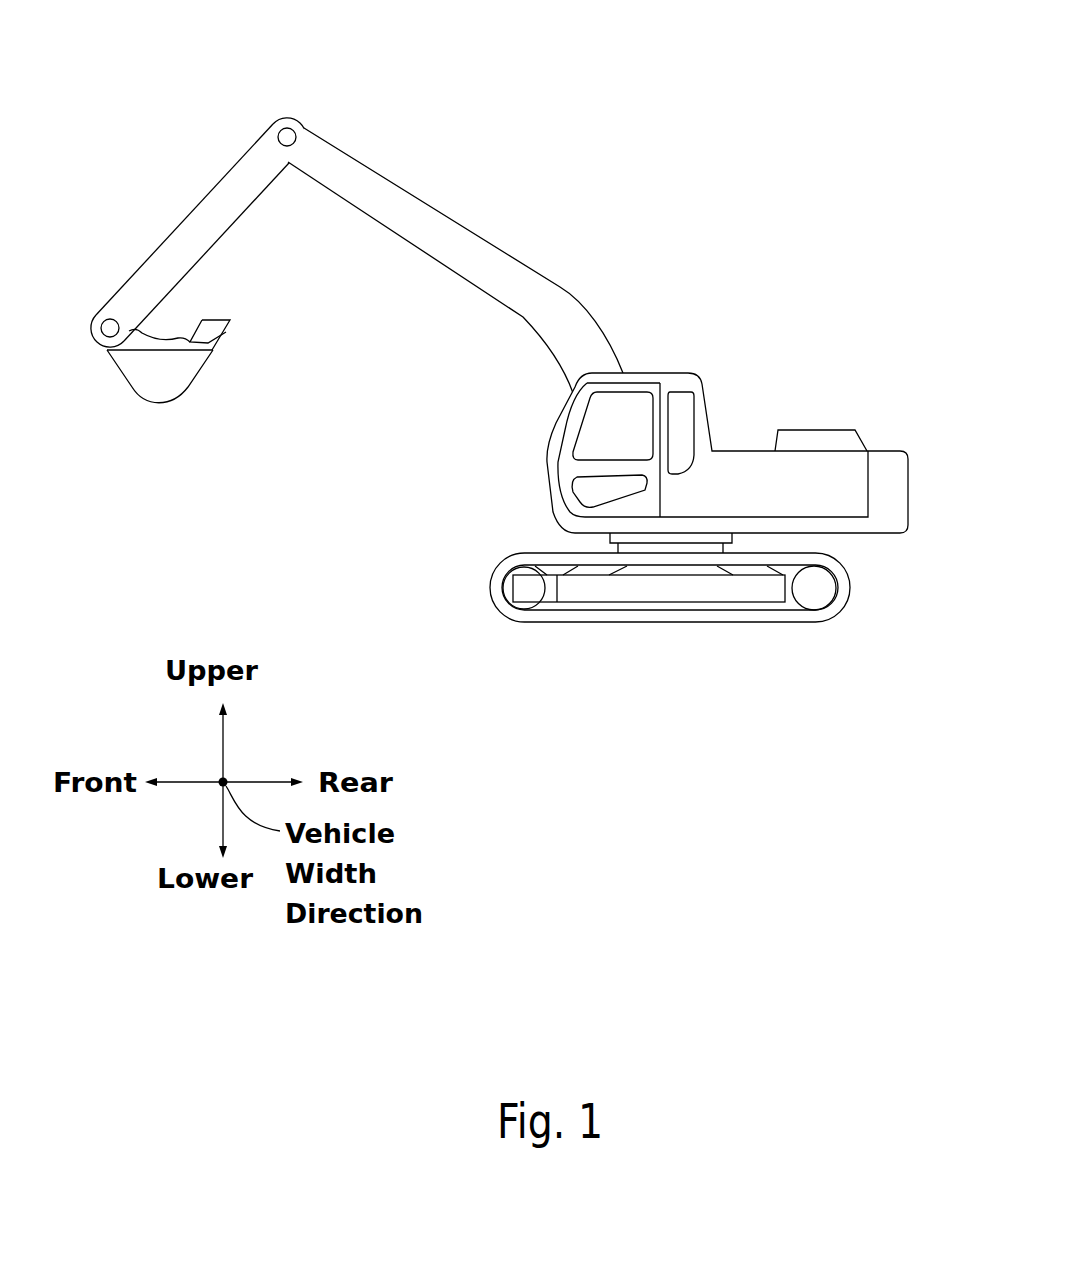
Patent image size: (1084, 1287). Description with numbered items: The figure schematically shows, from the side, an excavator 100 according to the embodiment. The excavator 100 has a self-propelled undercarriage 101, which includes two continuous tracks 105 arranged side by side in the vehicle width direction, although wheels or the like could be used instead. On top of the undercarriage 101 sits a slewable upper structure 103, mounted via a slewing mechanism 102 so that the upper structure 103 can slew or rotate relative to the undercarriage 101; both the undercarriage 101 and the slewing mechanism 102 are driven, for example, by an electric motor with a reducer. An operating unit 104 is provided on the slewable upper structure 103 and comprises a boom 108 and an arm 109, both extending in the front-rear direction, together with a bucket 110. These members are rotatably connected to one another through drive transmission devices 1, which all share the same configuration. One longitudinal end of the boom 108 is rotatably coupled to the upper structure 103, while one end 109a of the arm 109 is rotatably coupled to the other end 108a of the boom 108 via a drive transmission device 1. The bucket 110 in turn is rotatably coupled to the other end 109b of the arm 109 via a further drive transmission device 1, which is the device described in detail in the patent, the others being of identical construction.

The drive transmission device 1 is at (287, 118).
The excavator 100 is at (777, 289).
The undercarriage 101 is at (503, 617).
The slewing mechanism 102 is at (733, 545).
The slewable upper structure 103 is at (886, 450).
The operating unit 104 is at (367, 140).
The continuous track 105 is at (748, 624).
The boom 108 is at (450, 216).
The other end of the boom 108a is at (307, 174).
The arm 109 is at (180, 224).
The one end of the arm 109a is at (259, 139).
The other end of the arm 109b is at (110, 301).
The bucket 110 is at (192, 390).